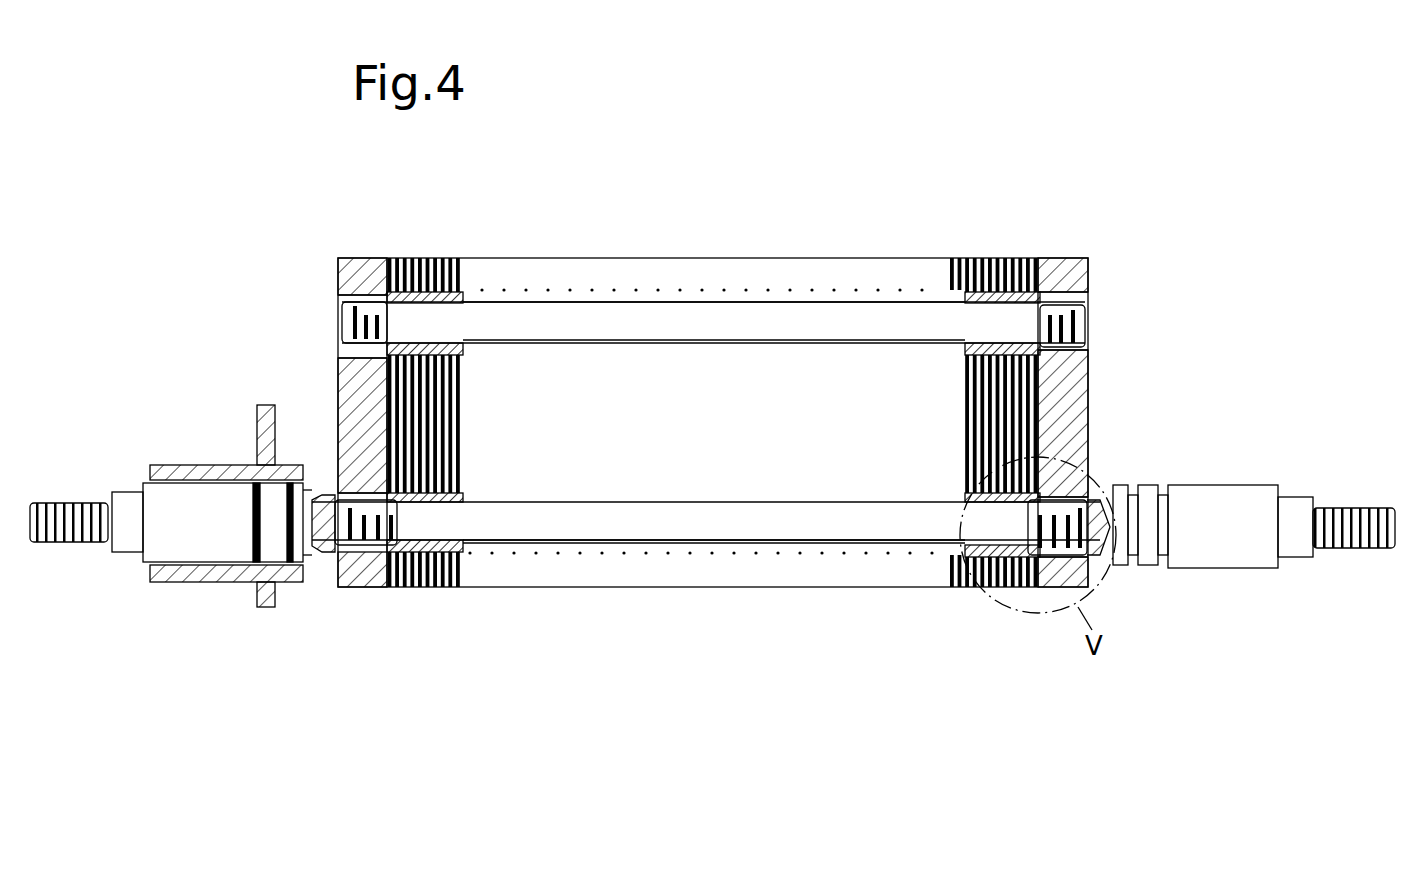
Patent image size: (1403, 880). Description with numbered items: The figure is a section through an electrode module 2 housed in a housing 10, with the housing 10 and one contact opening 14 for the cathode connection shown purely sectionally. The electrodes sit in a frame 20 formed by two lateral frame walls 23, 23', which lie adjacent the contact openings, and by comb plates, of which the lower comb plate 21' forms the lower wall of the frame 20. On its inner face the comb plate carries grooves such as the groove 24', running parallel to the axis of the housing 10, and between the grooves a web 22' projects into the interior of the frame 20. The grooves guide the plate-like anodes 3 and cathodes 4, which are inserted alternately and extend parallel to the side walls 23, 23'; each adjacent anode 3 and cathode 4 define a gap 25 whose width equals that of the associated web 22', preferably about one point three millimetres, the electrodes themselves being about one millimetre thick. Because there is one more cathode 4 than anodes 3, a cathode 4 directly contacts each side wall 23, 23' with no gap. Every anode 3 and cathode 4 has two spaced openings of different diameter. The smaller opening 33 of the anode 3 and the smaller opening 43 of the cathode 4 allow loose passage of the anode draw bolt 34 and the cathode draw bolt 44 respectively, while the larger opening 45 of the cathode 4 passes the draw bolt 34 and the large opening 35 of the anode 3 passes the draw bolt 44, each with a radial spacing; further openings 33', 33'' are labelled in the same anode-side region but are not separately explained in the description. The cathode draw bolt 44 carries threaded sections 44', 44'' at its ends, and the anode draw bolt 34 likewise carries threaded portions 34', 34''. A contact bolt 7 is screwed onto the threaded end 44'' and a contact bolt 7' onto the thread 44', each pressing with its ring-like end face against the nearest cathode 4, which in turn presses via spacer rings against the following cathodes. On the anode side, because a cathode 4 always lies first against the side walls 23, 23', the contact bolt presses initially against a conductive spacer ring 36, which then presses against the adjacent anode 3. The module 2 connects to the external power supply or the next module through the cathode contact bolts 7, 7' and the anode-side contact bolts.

The electrode module 2 is at (515, 232).
The anode 3 is at (402, 258).
The cathode 4 is at (392, 588).
The contact bolt 7 is at (1254, 556).
The contact bolt 7' is at (171, 486).
The housing 10 is at (256, 425).
The contact opening 14 is at (182, 580).
The frame 20 is at (690, 256).
The lower comb plate 21' is at (714, 585).
The web 22' is at (939, 238).
The lateral frame wall 23 is at (335, 422).
The lateral frame wall 23' is at (1099, 422).
The groove 24' is at (946, 600).
The gap 25 is at (458, 424).
The smaller opening 33 is at (452, 289).
The washer 33' is at (966, 335).
The washer 33'' is at (984, 357).
The draw bolt for the anode 34 is at (713, 345).
The threaded portion 34' is at (327, 325).
The threaded portion 34'' is at (1102, 318).
The large opening 35 is at (462, 500).
The conductive spacer ring 36 is at (1078, 353).
The smaller opening 43 is at (460, 548).
The draw bolt for the cathode 44 is at (711, 502).
The threaded section 44' is at (366, 562).
The threaded section 44'' is at (1095, 557).
The larger opening 45 is at (462, 353).